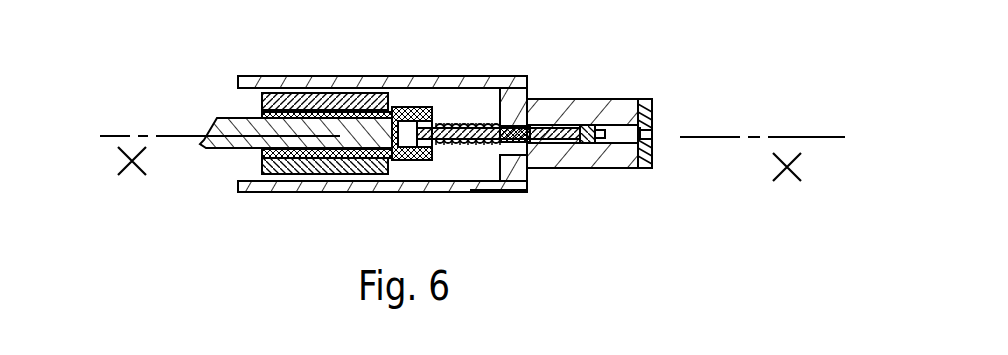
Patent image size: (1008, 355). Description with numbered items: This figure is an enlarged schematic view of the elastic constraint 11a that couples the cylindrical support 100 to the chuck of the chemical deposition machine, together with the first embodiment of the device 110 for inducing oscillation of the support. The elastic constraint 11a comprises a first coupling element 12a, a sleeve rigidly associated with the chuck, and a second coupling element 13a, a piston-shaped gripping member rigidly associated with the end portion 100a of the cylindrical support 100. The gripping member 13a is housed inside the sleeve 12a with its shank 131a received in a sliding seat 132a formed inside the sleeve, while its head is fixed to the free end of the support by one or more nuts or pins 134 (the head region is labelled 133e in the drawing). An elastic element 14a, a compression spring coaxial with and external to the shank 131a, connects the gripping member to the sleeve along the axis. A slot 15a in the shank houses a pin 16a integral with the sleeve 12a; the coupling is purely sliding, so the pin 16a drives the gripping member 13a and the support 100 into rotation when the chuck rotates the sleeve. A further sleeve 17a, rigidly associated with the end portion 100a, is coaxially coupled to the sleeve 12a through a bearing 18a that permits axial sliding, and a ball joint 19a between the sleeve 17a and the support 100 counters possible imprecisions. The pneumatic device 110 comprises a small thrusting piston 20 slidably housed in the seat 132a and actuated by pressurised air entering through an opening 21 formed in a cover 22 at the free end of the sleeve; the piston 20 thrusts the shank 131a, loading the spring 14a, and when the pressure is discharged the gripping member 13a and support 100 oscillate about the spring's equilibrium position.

The elastic constraint 11a is at (688, 68).
The first coupling element 12a is at (322, 88).
The second coupling element 13a is at (438, 109).
The elastic element 14a is at (468, 126).
The slot 15a is at (548, 140).
The pin 16a is at (523, 140).
The further sleeve 17a is at (262, 97).
The bearing 18a is at (266, 192).
The ball joint 19a is at (318, 192).
The small thrusting piston 20 is at (597, 128).
The opening 21 is at (656, 136).
The cover 22 is at (652, 110).
The cylindrical support 100 is at (200, 146).
The end portion 100a is at (380, 190).
The device for inducing oscillation 110 is at (586, 155).
The shank 131a is at (552, 142).
The sliding seat 132a is at (579, 126).
The guide block 133e is at (422, 192).
The nuts or pins 134 is at (410, 112).